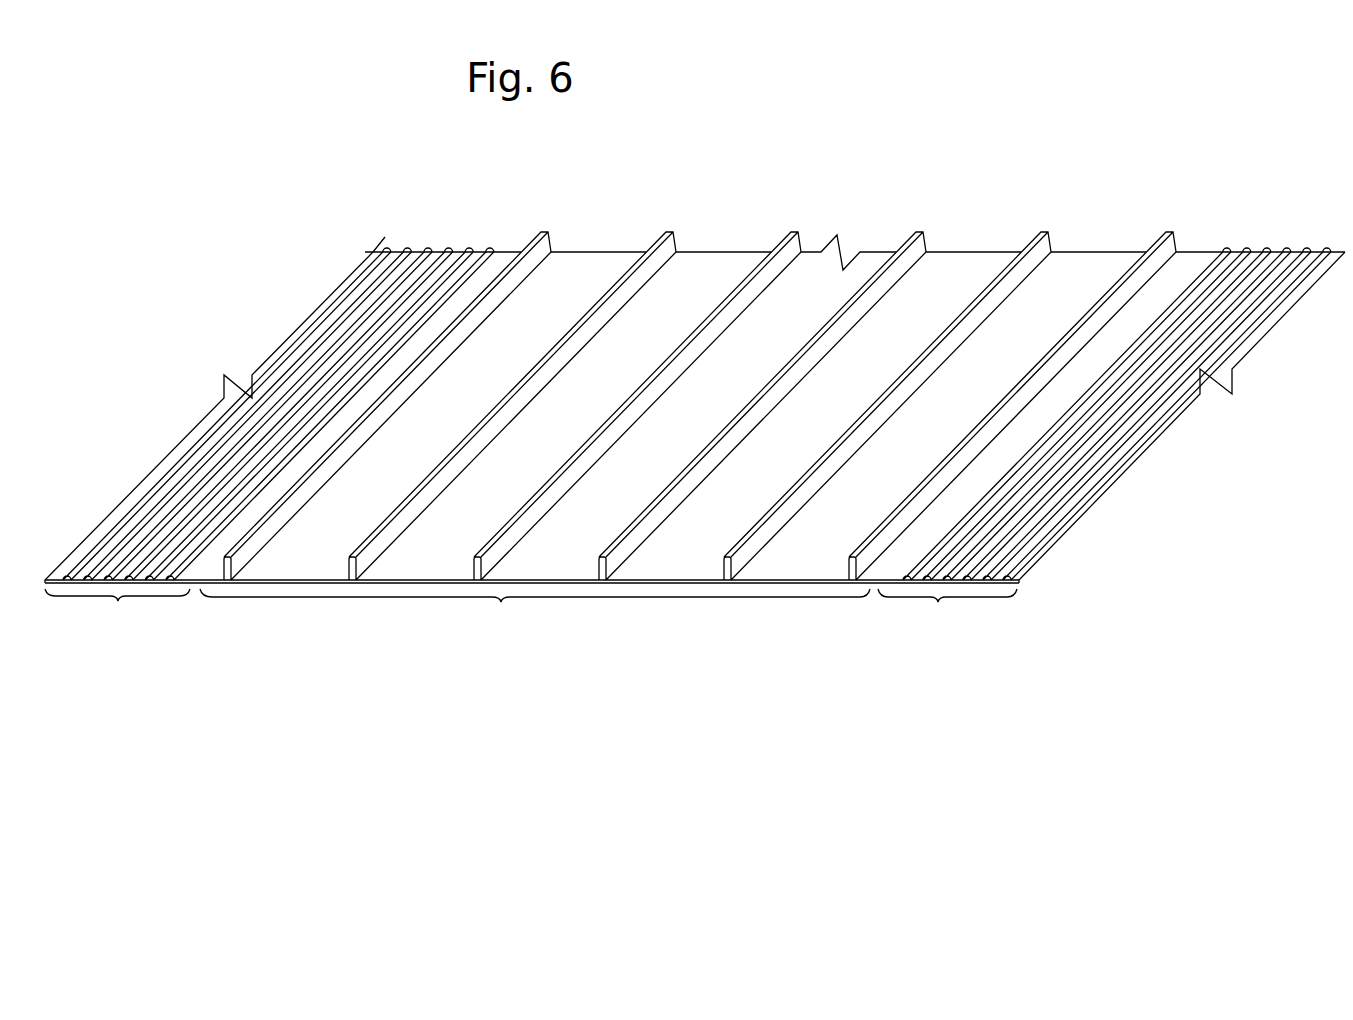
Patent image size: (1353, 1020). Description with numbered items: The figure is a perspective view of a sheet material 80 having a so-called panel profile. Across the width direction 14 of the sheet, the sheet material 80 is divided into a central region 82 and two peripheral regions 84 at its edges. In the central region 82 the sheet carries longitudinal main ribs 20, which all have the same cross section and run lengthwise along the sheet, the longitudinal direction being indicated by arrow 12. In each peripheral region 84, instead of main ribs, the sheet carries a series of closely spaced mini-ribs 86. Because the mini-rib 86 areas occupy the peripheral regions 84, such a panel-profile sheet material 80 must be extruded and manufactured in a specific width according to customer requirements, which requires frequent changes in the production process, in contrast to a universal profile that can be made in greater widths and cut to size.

The sheet material 80 is at (897, 149).
The longitudinal main ribs 20 is at (549, 230).
The mini-ribs 86 is at (404, 250).
The peripheral regions 84 is at (531, 607).
The central region 82 is at (535, 610).
The longitudinal direction 12 is at (255, 272).
The width direction 14 is at (397, 659).